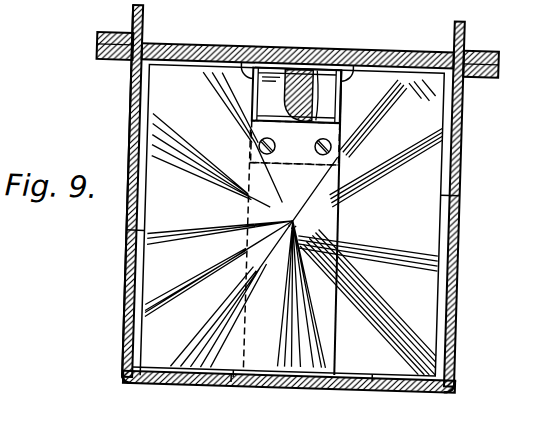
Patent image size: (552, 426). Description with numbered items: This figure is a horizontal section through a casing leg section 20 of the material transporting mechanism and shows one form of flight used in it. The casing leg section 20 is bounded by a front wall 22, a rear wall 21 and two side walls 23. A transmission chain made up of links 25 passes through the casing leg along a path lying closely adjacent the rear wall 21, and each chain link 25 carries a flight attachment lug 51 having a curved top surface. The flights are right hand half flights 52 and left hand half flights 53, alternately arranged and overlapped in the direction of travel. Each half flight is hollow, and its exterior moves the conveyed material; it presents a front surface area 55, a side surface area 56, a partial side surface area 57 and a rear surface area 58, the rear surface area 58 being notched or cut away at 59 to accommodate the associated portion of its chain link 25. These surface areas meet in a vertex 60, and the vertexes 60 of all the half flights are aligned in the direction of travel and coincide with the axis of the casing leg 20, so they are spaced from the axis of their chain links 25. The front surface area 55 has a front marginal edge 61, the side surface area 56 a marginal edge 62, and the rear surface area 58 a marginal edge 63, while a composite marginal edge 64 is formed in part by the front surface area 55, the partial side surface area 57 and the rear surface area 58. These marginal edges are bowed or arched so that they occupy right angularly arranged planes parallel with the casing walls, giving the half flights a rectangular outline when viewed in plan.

The casing leg section 20 is at (122, 391).
The rear wall 21 is at (224, 52).
The front wall 22 is at (180, 389).
The side walls 23 is at (132, 287).
The chain link 25 is at (290, 74).
The flight attachment lug 51 is at (295, 170).
The right hand half flight 52 is at (461, 381).
The left hand half flight 53 is at (138, 375).
The front surface area 55 is at (228, 354).
The side surface area 56 is at (183, 221).
The partial side surface area 57 is at (331, 221).
The rear surface area 58 is at (200, 107).
The notch 59 is at (257, 63).
The vertex 60 is at (294, 232).
The front marginal edge 61 is at (238, 382).
The marginal edge 62 is at (135, 235).
The marginal edge 63 is at (181, 61).
The composite marginal edge 64 is at (247, 224).